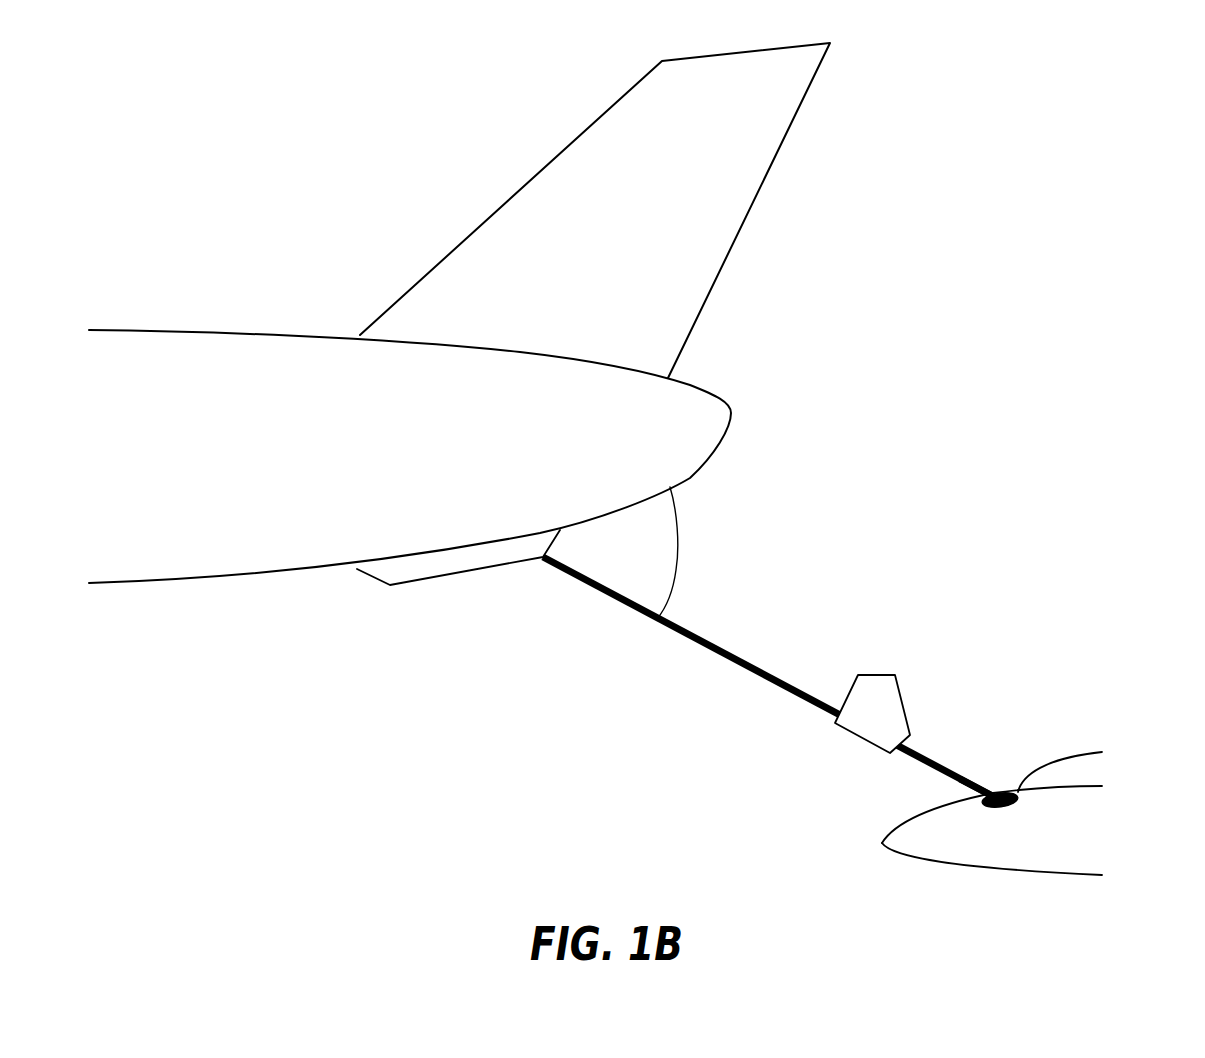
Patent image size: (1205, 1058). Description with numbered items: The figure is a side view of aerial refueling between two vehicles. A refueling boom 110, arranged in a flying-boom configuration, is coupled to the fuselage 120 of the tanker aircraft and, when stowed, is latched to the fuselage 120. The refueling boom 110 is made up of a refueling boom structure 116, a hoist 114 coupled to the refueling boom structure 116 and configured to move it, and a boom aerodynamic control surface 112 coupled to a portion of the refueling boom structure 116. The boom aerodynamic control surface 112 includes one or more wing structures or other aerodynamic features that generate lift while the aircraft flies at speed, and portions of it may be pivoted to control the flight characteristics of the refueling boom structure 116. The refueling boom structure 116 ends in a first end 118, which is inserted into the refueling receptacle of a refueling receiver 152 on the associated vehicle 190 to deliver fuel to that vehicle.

The refueling boom 110 is at (736, 643).
The boom aerodynamic control surface 112 is at (898, 680).
The hoist 114 is at (677, 528).
The refueling boom structure 116 is at (758, 688).
The first end 118 is at (979, 785).
The fuselage 120 is at (713, 390).
The refueling receiver 152 is at (992, 807).
The associated vehicle 190 is at (964, 738).